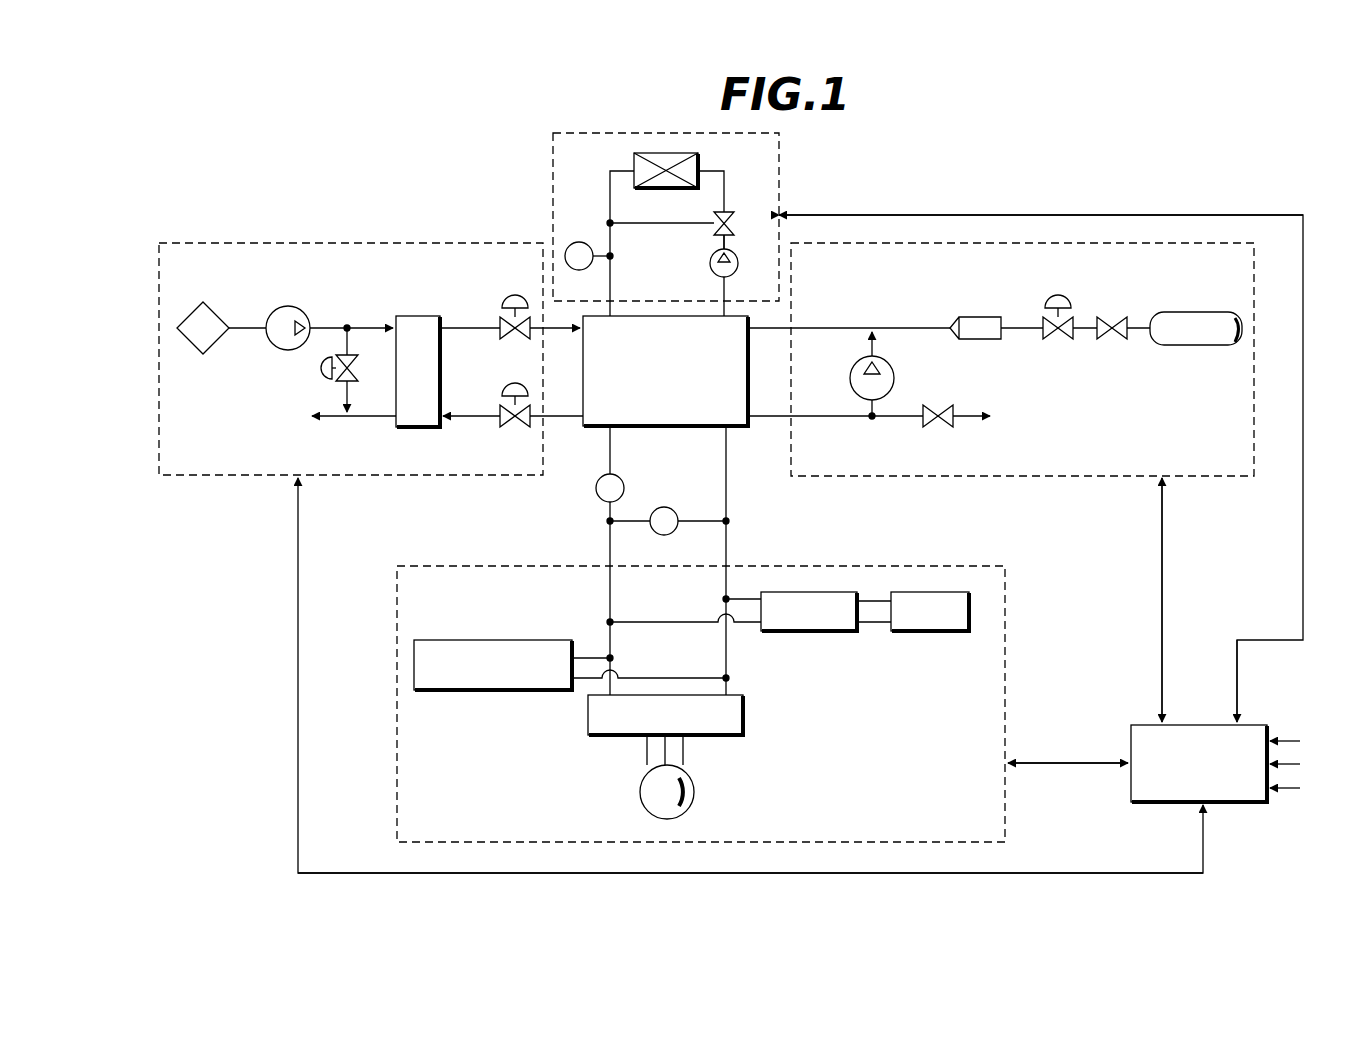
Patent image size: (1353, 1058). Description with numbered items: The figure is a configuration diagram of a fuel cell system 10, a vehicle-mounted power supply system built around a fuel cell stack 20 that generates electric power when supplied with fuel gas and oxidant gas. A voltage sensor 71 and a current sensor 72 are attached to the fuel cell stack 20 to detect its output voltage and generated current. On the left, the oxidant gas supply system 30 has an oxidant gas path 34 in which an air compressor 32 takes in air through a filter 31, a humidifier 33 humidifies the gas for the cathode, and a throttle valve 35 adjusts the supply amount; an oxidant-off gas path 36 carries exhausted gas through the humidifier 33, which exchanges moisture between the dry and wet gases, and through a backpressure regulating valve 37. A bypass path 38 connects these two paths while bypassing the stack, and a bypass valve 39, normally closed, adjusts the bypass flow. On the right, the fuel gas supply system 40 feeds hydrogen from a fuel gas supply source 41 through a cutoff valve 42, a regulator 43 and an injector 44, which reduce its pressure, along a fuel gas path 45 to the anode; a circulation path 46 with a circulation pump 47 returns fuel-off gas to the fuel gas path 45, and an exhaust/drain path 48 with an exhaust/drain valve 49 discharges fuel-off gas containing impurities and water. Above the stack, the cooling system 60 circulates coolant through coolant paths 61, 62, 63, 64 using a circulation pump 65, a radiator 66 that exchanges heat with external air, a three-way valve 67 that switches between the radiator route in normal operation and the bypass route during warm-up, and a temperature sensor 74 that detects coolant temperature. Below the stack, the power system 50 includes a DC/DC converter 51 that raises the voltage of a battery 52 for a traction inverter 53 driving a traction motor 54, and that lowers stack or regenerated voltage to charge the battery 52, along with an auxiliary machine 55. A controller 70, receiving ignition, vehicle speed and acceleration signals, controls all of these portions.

The fuel cell system 10 is at (1035, 148).
The fuel cell stack 20 is at (730, 430).
The oxidant gas supply system 30 is at (345, 243).
The filter 31 is at (213, 310).
The air compressor 32 is at (288, 305).
The humidifier 33 is at (420, 315).
The oxidant gas path 34 is at (462, 327).
The throttle valve 35 is at (512, 296).
The oxidant-off gas path 36 is at (465, 415).
The backpressure regulating valve 37 is at (514, 389).
The bypass path 38 is at (342, 341).
The bypass valve 39 is at (322, 378).
The fuel gas supply system 40 is at (1193, 476).
The fuel gas supply source 41 is at (1193, 311).
The cutoff valve 42 is at (1118, 320).
The regulator 43 is at (1062, 296).
The injector 44 is at (980, 316).
The fuel gas path 45 is at (812, 327).
The circulation path 46 is at (806, 415).
The circulation pump 47 is at (895, 372).
The exhaust/drain path 48 is at (965, 415).
The exhaust/drain valve 49 is at (930, 428).
The power system 50 is at (1008, 592).
The DC/DC converter 51 is at (810, 632).
The battery 52 is at (922, 632).
The traction inverter 53 is at (745, 720).
The traction motor 54 is at (697, 790).
The auxiliary machine 55 is at (490, 640).
The cooling system 60 is at (780, 140).
The coolant path 61 is at (730, 298).
The coolant path 62 is at (690, 225).
The coolant path 63 is at (612, 262).
The coolant path 64 is at (700, 171).
The circulation pump 65 is at (731, 256).
The radiator 66 is at (675, 188).
The three-way valve 67 is at (729, 214).
The controller 70 is at (1252, 724).
The voltage sensor 71 is at (676, 532).
The current sensor 72 is at (598, 500).
The temperature sensor 74 is at (582, 242).